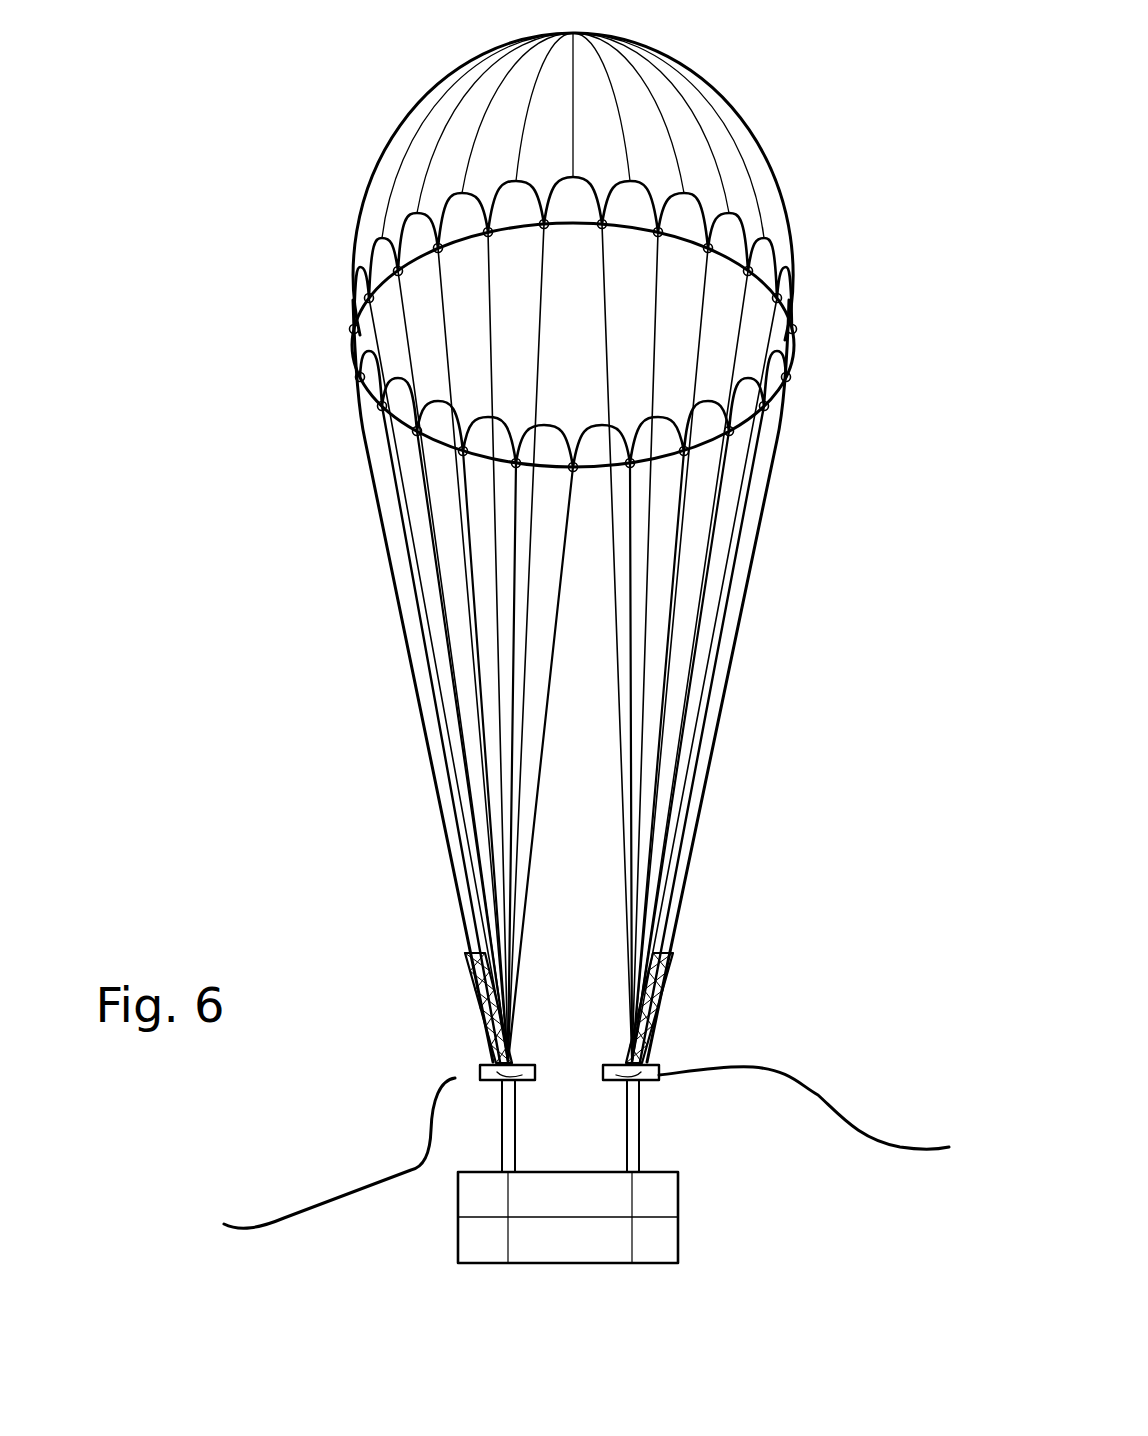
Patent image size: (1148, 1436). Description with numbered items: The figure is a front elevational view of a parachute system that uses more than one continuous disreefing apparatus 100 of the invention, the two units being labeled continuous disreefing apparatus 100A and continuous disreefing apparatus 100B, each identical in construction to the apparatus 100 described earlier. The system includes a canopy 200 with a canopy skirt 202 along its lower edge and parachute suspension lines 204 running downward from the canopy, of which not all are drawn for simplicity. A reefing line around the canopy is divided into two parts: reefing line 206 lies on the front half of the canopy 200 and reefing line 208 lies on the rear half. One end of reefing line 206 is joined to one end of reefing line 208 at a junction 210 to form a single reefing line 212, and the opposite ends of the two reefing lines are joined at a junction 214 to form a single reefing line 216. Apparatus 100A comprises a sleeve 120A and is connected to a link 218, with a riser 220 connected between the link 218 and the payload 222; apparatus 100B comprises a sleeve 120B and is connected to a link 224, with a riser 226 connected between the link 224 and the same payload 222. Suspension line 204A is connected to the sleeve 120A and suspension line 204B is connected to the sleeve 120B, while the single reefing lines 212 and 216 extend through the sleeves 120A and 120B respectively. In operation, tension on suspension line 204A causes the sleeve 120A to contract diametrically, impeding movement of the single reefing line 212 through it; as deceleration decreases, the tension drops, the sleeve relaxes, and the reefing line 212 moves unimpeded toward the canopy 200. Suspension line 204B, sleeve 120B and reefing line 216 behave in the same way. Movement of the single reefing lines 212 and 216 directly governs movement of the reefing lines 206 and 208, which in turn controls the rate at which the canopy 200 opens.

The canopy 200 is at (628, 42).
The canopy skirt 202 is at (370, 255).
The parachute suspension lines 204 is at (440, 330).
The suspension line 204A is at (410, 556).
The suspension line 204B is at (717, 562).
The reefing line 206 is at (574, 228).
The reefing line 208 is at (412, 630).
The junction 210 is at (450, 828).
The single reefing line 212 is at (457, 890).
The junction 214 is at (690, 825).
The single reefing line 216 is at (673, 913).
The link 218 is at (520, 1084).
The riser 220 is at (498, 1144).
The payload 222 is at (565, 1263).
The link 224 is at (642, 1084).
The riser 226 is at (636, 1158).
The continuous disreefing apparatus 100 is at (573, 1008).
The continuous disreefing apparatus 100A is at (483, 1013).
The continuous disreefing apparatus 100B is at (673, 1003).
The sleeve 120A is at (480, 1045).
The sleeve 120B is at (660, 1033).